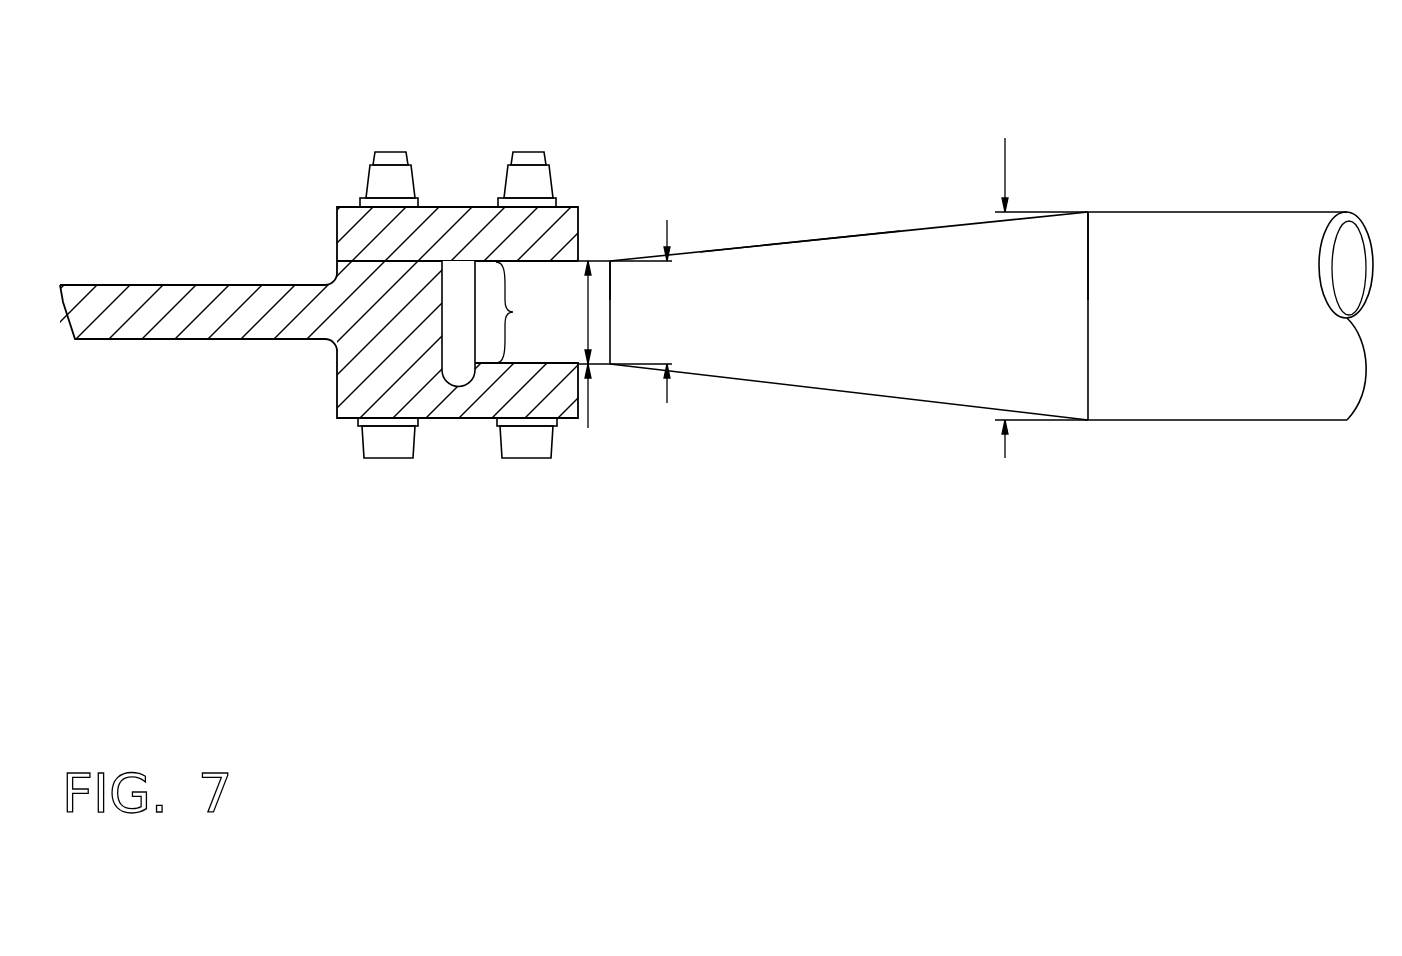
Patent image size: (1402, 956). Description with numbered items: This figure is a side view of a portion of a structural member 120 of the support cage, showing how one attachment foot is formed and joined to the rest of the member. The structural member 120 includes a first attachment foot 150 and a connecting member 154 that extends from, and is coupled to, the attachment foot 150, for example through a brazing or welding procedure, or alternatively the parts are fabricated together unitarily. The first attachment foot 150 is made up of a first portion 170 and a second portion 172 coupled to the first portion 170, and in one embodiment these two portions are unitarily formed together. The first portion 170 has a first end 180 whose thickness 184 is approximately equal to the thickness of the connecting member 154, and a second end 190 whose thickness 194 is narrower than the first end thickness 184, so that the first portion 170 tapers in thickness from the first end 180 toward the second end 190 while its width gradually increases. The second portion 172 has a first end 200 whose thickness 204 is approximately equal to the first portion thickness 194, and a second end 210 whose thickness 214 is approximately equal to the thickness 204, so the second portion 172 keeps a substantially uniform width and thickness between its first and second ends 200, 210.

The structural member 120 is at (1194, 139).
The first attachment foot 150 is at (843, 219).
The connecting member 154 is at (1219, 329).
The first portion 170 is at (883, 332).
The second portion 172 is at (565, 357).
The first end 180 is at (1090, 212).
The thickness 184 is at (1006, 152).
The second end 190 is at (610, 283).
The thickness 194 is at (667, 230).
The first end 200 is at (610, 333).
The thickness 204 is at (588, 405).
The second end 210 is at (456, 305).
The thickness 214 is at (529, 312).